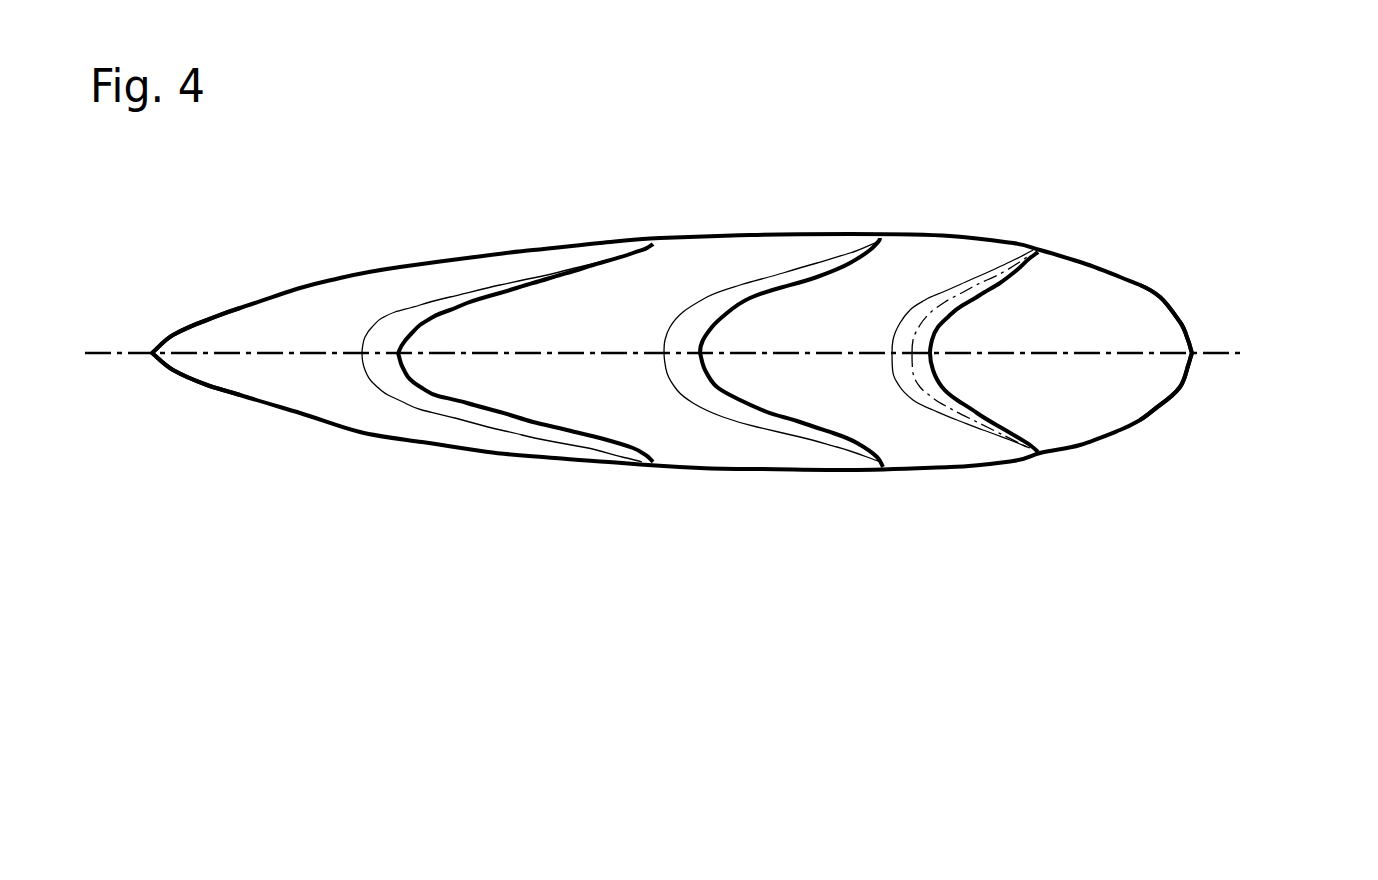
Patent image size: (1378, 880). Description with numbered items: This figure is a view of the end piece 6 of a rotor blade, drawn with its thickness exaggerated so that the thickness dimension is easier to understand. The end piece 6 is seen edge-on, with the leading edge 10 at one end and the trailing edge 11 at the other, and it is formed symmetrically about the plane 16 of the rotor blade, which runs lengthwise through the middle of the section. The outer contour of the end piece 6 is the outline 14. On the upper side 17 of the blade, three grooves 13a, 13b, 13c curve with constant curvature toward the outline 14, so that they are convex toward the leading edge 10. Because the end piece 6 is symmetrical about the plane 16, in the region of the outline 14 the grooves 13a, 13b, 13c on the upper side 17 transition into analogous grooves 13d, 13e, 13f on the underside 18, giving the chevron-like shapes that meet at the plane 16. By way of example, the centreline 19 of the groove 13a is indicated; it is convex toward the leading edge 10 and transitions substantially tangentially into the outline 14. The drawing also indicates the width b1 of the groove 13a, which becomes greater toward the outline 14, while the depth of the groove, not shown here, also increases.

The end piece 6 is at (1122, 323).
The leading edge 10 is at (1192, 352).
The trailing edge 11 is at (152, 357).
The groove 13a is at (988, 270).
The groove 13b is at (818, 263).
The groove 13c is at (480, 296).
The groove 13d is at (988, 425).
The groove 13e is at (817, 437).
The groove 13f is at (478, 408).
The outline 14 is at (1082, 357).
The plane of the rotor blade 16 is at (691, 456).
The upper side 17 is at (592, 253).
The underside 18 is at (593, 453).
The centreline of the groove 19 is at (912, 366).
The width of the groove b1 is at (882, 273).